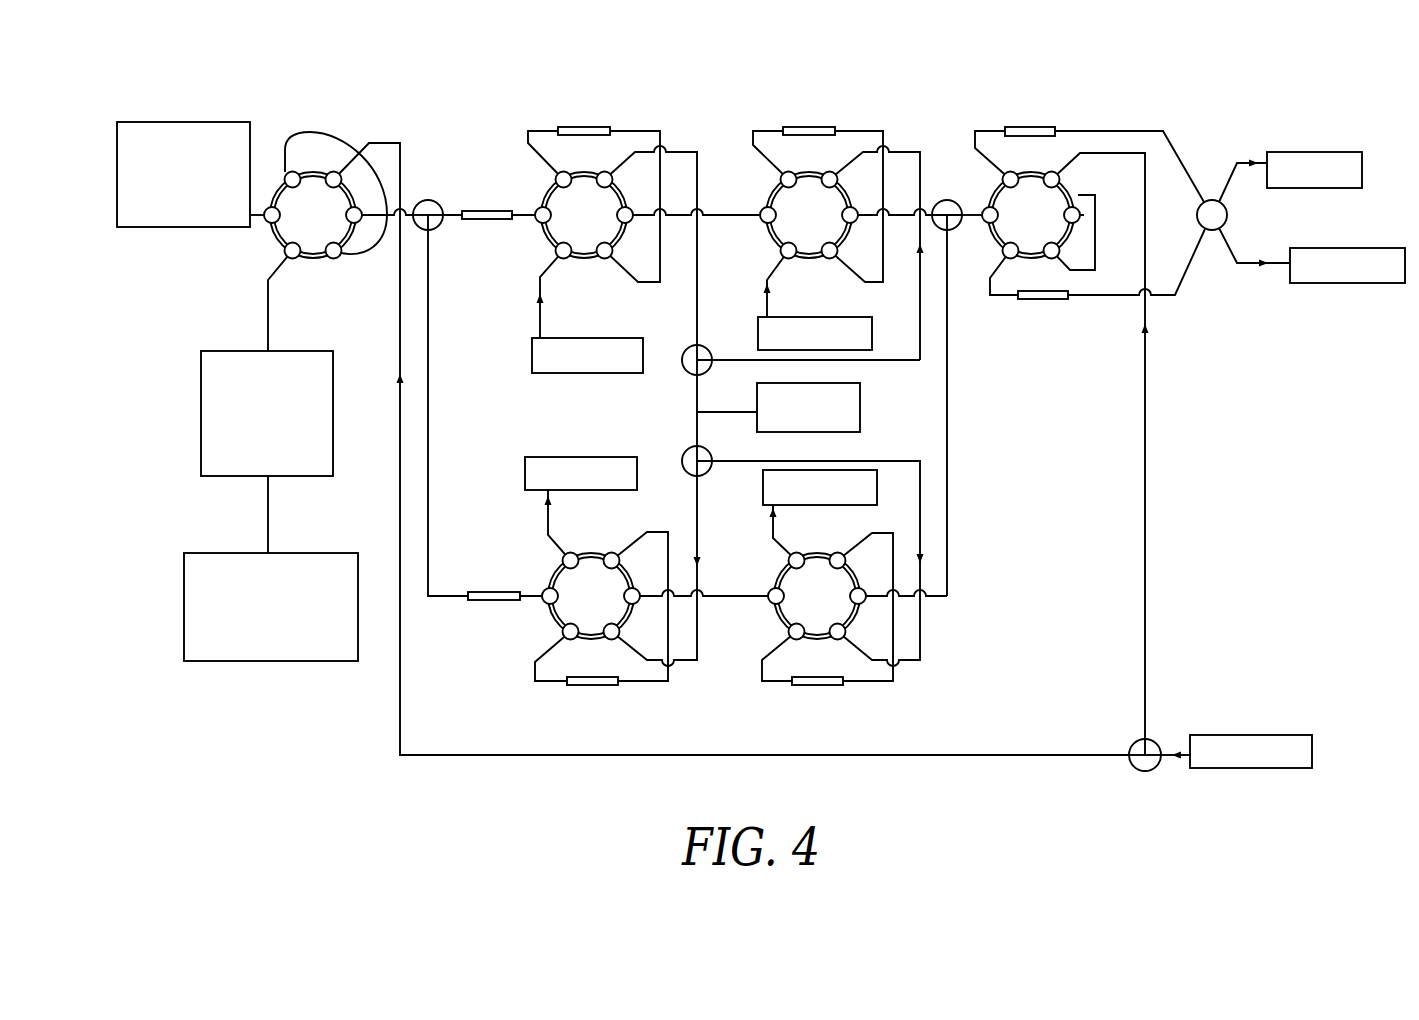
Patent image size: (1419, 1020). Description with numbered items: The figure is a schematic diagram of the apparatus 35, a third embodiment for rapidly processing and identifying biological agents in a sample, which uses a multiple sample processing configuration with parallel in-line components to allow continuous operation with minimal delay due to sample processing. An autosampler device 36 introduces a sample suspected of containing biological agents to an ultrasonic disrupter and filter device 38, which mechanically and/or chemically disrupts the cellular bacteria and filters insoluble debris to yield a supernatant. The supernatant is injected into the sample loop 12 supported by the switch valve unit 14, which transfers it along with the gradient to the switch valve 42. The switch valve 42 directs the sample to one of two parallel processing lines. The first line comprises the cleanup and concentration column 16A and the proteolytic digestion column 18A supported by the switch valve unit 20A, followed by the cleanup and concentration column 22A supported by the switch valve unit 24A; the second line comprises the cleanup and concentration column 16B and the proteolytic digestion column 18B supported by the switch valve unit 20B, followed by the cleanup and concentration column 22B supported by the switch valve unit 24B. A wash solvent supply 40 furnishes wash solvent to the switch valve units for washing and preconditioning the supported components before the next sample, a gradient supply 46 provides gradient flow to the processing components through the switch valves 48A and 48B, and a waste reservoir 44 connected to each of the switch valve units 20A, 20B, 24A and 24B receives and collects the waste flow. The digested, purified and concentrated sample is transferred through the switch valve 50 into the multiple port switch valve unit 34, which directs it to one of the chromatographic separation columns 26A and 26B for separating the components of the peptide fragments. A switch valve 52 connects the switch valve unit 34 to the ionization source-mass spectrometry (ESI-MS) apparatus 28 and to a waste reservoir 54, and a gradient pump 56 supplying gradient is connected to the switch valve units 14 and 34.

The sample loop 12 is at (287, 147).
The switch valve unit 14 is at (274, 239).
The cleanup and concentration column 16A is at (480, 219).
The cleanup and concentration column 16B is at (487, 592).
The proteolytic digestion column 18A is at (588, 127).
The proteolytic digestion column 18B is at (590, 685).
The switch valve unit 20A is at (595, 266).
The switch valve unit 20B is at (546, 625).
The cleanup and concentration column 22A is at (812, 127).
The cleanup and concentration column 22B is at (802, 685).
The switch valve unit 24A is at (765, 183).
The switch valve unit 24B is at (776, 630).
The chromatographic separation column 26A is at (1015, 127).
The chromatographic separation column 26B is at (1040, 299).
The ionization source-mass spectrometry (ESI-MS) apparatus 28 is at (1312, 152).
The multiple port switch valve unit 34 is at (1037, 170).
The apparatus 35 is at (1181, 89).
The autosampler device 36 is at (184, 558).
The ultrasonic disrupter and filter device 38 is at (201, 385).
The wash solvent supply 40 is at (117, 150).
The switch valve 42 is at (432, 200).
The waste reservoir 44 is at (874, 337).
The gradient supply 46 is at (860, 393).
The switch valve 48A is at (705, 348).
The switch valve 48B is at (713, 450).
The switch valve 50 is at (947, 200).
The switch valve 52 is at (1212, 200).
The waste reservoir 54 is at (1332, 283).
The gradient pump 56 is at (1155, 742).